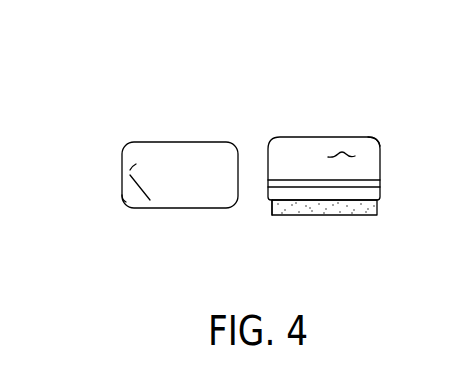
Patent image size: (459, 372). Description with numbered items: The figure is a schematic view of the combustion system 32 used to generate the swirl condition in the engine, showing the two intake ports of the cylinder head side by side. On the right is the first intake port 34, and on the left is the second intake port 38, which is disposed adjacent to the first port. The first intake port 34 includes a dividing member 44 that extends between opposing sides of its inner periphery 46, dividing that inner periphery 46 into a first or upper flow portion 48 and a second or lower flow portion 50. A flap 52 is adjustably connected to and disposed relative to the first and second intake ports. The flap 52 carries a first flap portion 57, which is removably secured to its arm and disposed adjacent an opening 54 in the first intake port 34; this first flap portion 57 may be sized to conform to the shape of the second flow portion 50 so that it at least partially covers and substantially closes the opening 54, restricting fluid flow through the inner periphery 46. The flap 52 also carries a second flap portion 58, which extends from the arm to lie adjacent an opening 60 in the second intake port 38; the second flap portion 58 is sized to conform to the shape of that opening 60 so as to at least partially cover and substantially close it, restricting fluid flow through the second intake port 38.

The combustion system 32 is at (241, 62).
The first intake port 34 is at (311, 120).
The second intake port 38 is at (104, 142).
The dividing member 44 is at (373, 184).
The inner periphery 46 is at (344, 152).
The first or upper flow portion 48 is at (373, 160).
The second or lower flow portion 50 is at (373, 196).
The flap 52 is at (140, 204).
The opening 54 is at (374, 138).
The first flap portion 57 is at (282, 208).
The second flap portion 58 is at (137, 165).
The opening 60 is at (123, 198).